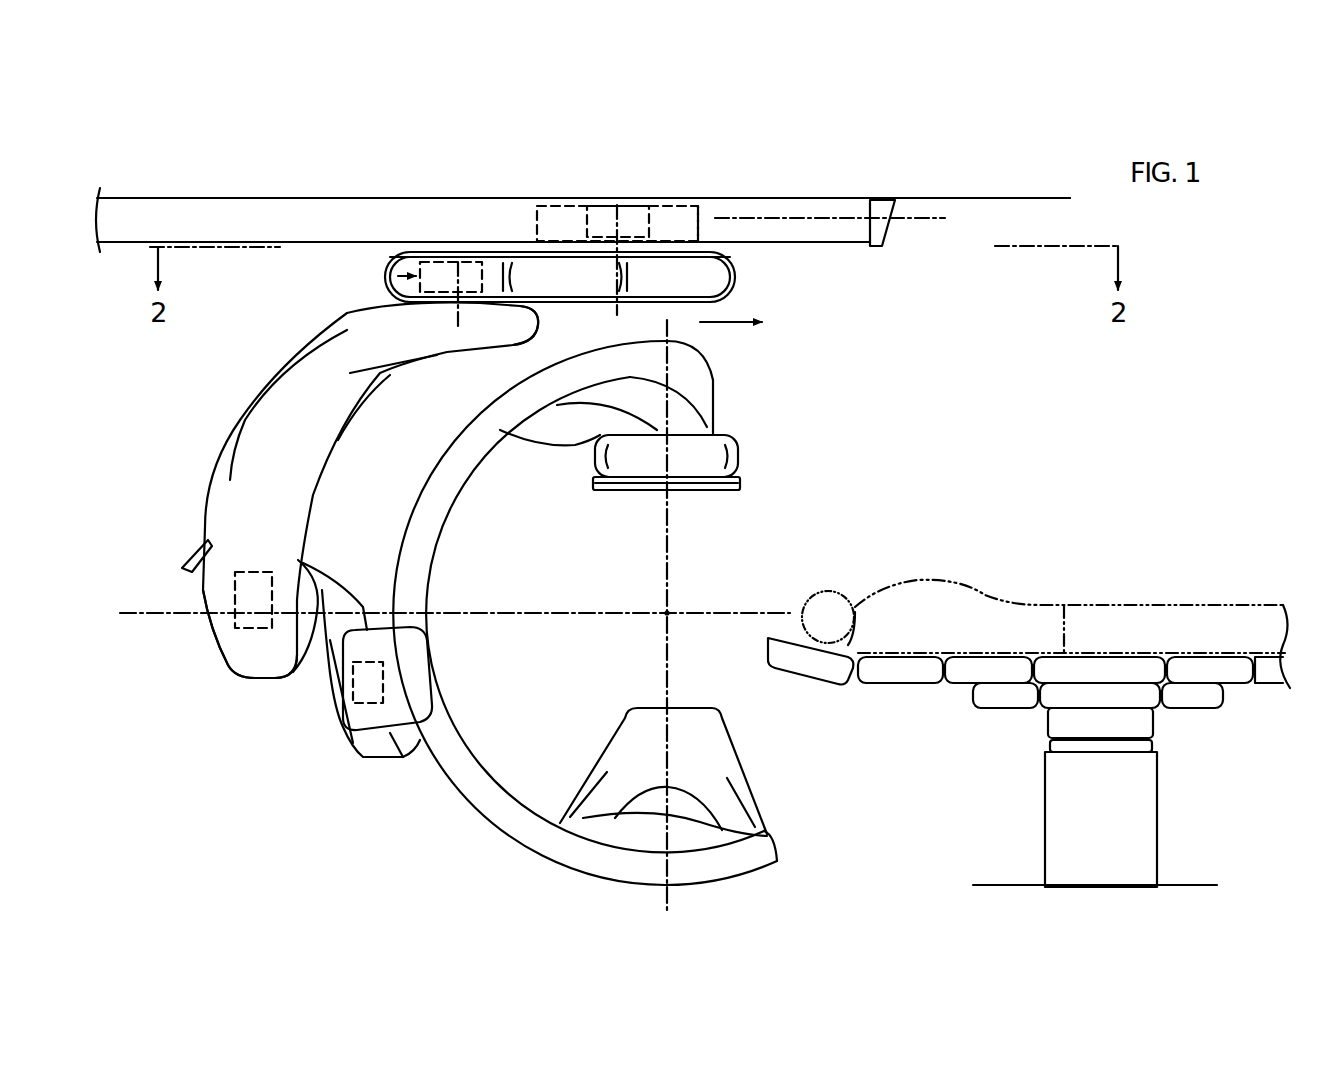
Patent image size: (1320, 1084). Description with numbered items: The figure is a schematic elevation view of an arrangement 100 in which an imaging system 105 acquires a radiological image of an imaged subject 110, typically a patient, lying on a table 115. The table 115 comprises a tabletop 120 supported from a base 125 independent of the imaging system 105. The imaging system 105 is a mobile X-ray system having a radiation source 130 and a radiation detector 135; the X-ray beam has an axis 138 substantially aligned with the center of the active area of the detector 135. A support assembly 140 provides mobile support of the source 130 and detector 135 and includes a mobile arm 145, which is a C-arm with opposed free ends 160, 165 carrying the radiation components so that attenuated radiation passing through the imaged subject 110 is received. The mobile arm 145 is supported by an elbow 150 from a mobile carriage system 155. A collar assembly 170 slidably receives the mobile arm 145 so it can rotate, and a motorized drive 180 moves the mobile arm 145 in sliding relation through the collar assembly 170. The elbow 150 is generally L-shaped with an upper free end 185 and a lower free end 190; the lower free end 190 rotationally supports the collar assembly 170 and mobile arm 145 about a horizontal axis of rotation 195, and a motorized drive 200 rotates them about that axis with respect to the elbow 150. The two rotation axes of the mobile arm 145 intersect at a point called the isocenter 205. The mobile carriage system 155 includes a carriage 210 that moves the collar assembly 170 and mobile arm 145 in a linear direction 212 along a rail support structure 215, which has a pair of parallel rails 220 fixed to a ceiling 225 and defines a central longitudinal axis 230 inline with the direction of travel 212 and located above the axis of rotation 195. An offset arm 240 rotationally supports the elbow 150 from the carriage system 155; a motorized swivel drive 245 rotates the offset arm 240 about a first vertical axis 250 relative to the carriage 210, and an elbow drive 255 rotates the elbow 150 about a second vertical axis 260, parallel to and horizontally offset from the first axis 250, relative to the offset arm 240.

The arrangement 100 is at (1175, 367).
The imaging system 105 is at (882, 400).
The imaged subject 110 is at (968, 580).
The table 115 is at (912, 712).
The tabletop 120 is at (783, 640).
The base 125 is at (1170, 797).
The radiation source 130 is at (750, 457).
The radiation detector 135 is at (709, 738).
The axis of the X-ray beam 138 is at (670, 897).
The support assembly 140 is at (208, 175).
The mobile arm 145 is at (455, 532).
The elbow 150 is at (205, 471).
The mobile carriage system 155 is at (917, 150).
The first free end 160 is at (716, 400).
The second free end 165 is at (780, 838).
The collar assembly 170 is at (343, 777).
The motorized drive 180 is at (353, 700).
The upper free end 185 is at (545, 334).
The lower free end 190 is at (233, 675).
The axis of rotation 195 is at (510, 612).
The motorized drive 200 is at (232, 593).
The isocenter 205 is at (670, 607).
The carriage 210 is at (704, 212).
The linear direction 212 is at (733, 322).
The rail support structure 215 is at (892, 235).
The rails 220 is at (830, 248).
The ceiling 225 is at (982, 198).
The central longitudinal axis 230 is at (945, 220).
The offset arm 240 is at (505, 255).
The motorized swivel drive 245 is at (580, 218).
The first axis 250 is at (616, 210).
The elbow drive 255 is at (374, 278).
The second axis 260 is at (457, 262).